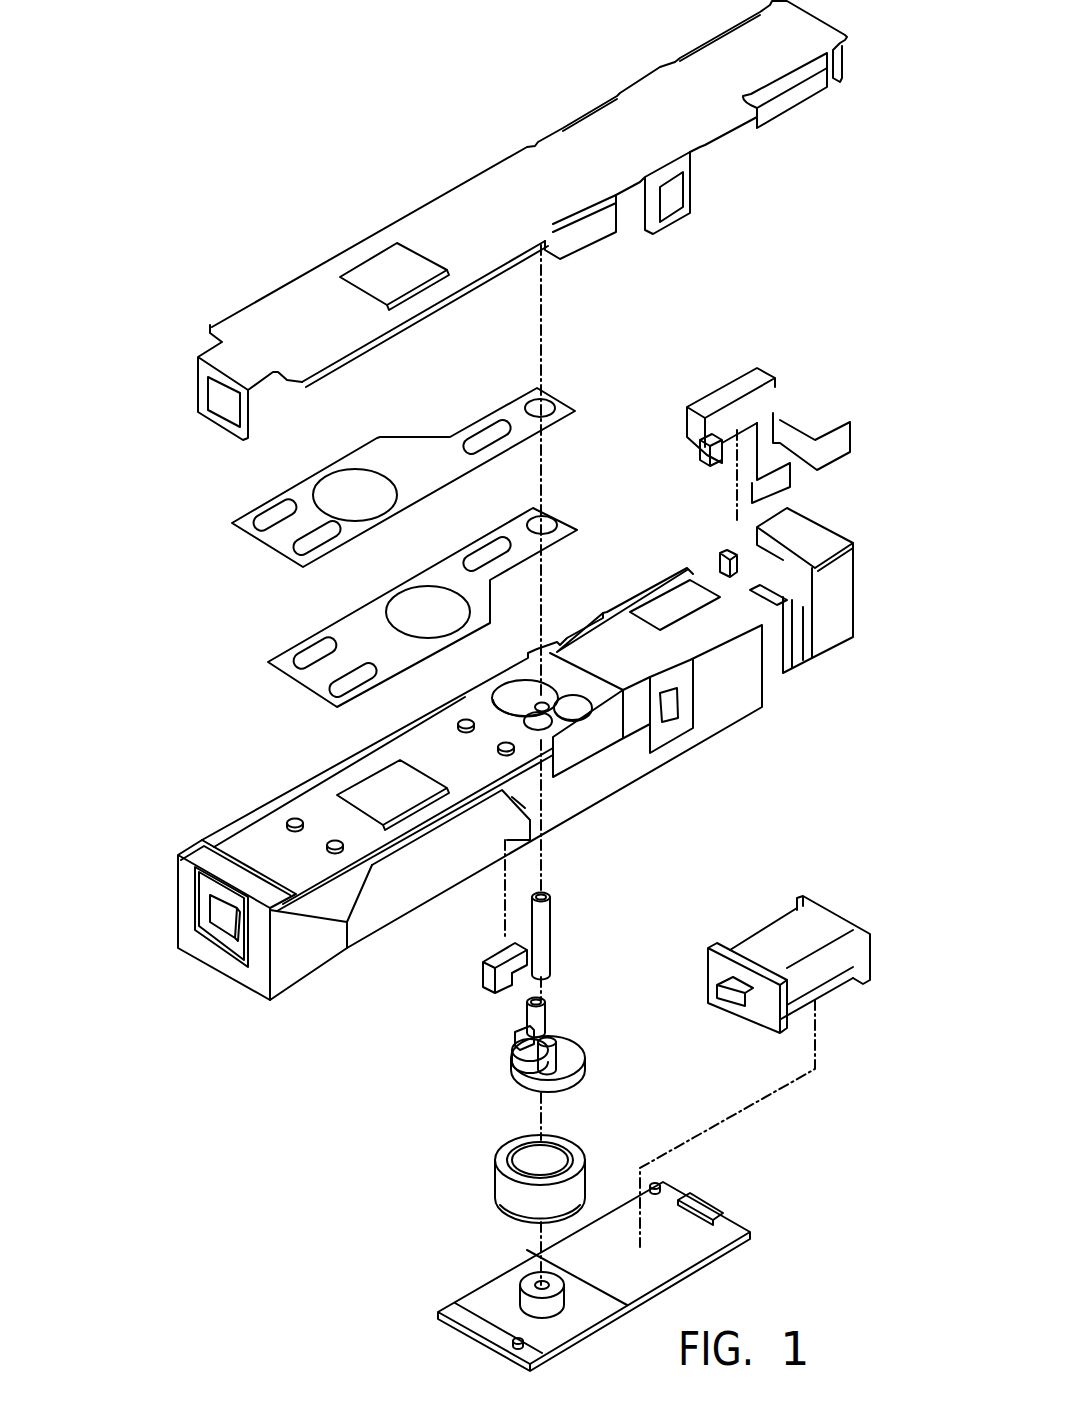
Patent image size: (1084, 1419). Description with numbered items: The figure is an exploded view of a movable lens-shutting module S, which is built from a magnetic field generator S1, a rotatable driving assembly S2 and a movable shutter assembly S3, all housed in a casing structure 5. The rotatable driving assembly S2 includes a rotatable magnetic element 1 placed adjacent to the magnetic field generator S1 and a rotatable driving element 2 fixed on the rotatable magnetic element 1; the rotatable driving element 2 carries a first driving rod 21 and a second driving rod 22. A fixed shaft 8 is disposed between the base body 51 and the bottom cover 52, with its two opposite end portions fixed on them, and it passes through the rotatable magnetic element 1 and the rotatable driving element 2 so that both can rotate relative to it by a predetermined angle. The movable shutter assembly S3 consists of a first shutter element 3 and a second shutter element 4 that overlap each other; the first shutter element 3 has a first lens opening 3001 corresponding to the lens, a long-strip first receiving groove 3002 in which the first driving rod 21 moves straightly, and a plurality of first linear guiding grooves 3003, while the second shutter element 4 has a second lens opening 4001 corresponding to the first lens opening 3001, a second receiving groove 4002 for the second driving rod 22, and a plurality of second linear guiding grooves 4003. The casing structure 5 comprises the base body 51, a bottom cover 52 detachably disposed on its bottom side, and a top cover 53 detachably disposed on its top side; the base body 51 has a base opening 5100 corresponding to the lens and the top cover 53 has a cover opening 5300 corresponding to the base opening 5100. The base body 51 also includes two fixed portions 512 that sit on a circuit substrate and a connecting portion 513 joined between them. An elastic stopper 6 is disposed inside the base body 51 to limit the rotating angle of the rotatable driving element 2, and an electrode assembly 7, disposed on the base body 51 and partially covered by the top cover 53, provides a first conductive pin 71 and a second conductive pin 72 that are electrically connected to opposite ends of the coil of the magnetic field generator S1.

The movable lens-shutting module S is at (187, 32).
The rotatable magnetic element 1 is at (575, 1142).
The rotatable driving element 2 is at (590, 1058).
The first driving rod 21 is at (530, 1020).
The second driving rod 22 is at (547, 1062).
The first shutter element 3 is at (262, 546).
The first lens opening 3001 is at (355, 477).
The first receiving groove 3002 is at (544, 406).
The first linear guiding grooves 3003 is at (478, 436).
The second shutter element 4 is at (290, 678).
The second lens opening 4001 is at (420, 591).
The second receiving groove 4002 is at (555, 525).
The second linear guiding grooves 4003 is at (497, 536).
The casing structure 5 is at (212, 63).
The base body 51 is at (720, 724).
The base opening 5100 is at (370, 782).
The fixed portions 512 is at (302, 950).
The connecting portion 513 is at (417, 838).
The bottom cover 52 is at (500, 1275).
The top cover 53 is at (492, 170).
The cover opening 5300 is at (372, 272).
The elastic stopper 6 is at (482, 975).
The electrode assembly 7 is at (743, 320).
The first conductive pin 71 is at (730, 397).
The second conductive pin 72 is at (700, 455).
The fixed shaft 8 is at (553, 947).
The magnetic field generator S1 is at (763, 931).
The rotatable driving assembly S2 is at (663, 977).
The movable shutter assembly S3 is at (180, 565).